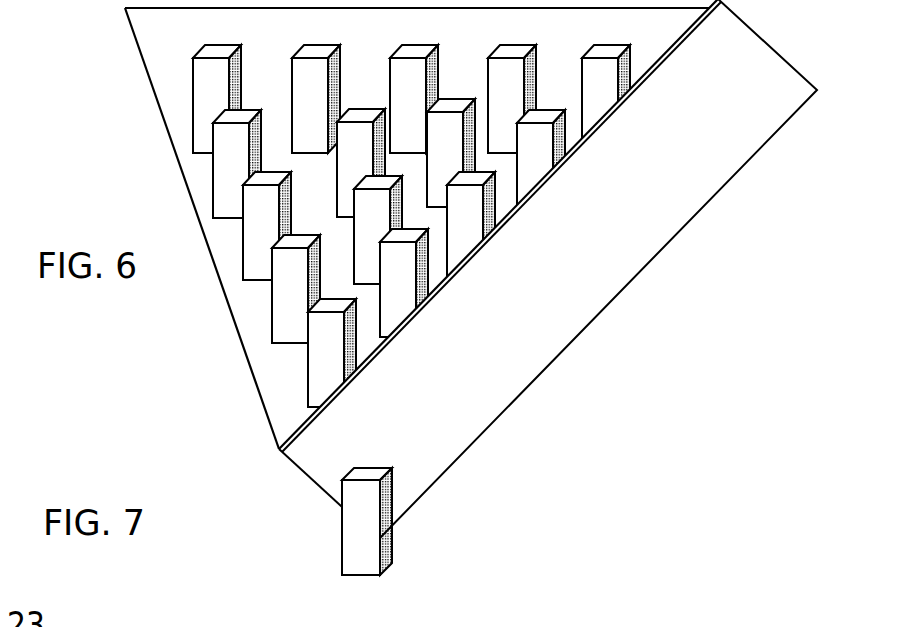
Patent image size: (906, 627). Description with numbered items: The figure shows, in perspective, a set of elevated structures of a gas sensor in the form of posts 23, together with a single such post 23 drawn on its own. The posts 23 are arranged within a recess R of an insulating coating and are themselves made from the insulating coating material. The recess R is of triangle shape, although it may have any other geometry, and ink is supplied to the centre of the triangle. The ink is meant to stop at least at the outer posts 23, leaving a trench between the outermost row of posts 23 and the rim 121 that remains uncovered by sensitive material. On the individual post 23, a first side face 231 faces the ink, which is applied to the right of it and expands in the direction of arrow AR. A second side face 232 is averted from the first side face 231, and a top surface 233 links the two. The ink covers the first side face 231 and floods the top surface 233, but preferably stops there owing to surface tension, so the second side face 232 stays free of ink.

In FIG. 6, the post 23 is at (603, 83).
In FIG. 7, the post 23 is at (341, 504).
In FIG. 6, the rim 121 is at (548, 270).
In FIG. 6, the recess R is at (421, 226).
In FIG. 7, the first side face 231 is at (394, 548).
In FIG. 7, the second side face 232 is at (340, 560).
In FIG. 7, the top surface 233 is at (377, 466).
In FIG. 7, the arrow AR is at (497, 522).